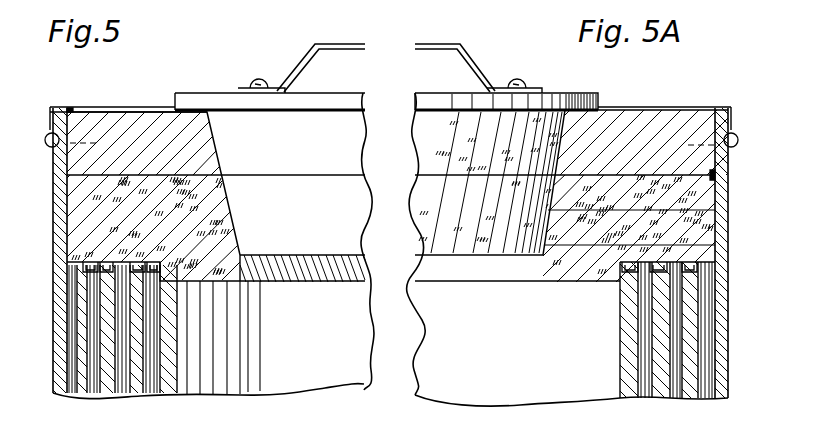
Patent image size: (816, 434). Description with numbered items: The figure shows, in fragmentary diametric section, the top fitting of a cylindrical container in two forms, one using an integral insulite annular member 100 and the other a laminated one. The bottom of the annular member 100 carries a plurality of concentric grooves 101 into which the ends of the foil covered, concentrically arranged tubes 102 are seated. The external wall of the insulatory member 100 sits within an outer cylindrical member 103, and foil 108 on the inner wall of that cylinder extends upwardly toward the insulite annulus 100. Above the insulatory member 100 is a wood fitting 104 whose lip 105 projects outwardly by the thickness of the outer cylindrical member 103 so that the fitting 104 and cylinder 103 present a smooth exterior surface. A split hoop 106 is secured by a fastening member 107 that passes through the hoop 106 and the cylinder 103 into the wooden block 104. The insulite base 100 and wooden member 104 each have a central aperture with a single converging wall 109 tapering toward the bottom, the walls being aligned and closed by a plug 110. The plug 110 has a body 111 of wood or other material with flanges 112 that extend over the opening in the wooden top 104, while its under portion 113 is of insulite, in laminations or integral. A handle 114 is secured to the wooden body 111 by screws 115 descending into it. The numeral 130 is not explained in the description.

In FIG. 5, the annular member 100 is at (80, 224).
In FIG. 5A, the annular member 100 is at (705, 245).
In FIG. 5, the concentric grooves 101 is at (140, 263).
In FIG. 5A, the concentric grooves 101 is at (690, 263).
In FIG. 5, the tubes 102 is at (152, 378).
In FIG. 5A, the tubes 102 is at (662, 372).
In FIG. 5, the outer cylindrical member 103 is at (62, 368).
In FIG. 5A, the outer cylindrical member 103 is at (720, 370).
In FIG. 5, the wood fitting 104 is at (100, 122).
In FIG. 5A, the wood fitting 104 is at (636, 120).
In FIG. 5, the lip 105 is at (52, 110).
In FIG. 5A, the lip 105 is at (729, 112).
In FIG. 5, the split hoop 106 is at (71, 110).
In FIG. 5A, the split hoop 106 is at (717, 176).
In FIG. 5, the fastening member 107 is at (48, 142).
In FIG. 5A, the fastening member 107 is at (732, 143).
In FIG. 5, the foil 108 is at (77, 350).
In FIG. 5A, the foil 108 is at (700, 346).
In FIG. 5, the converging wall 109 is at (360, 284).
In FIG. 5A, the converging wall 109 is at (481, 284).
In FIG. 5, the plug 110 is at (366, 105).
In FIG. 5A, the plug 110 is at (490, 182).
In FIG. 5, the body 111 is at (362, 169).
In FIG. 5, the flanges 112 is at (341, 103).
In FIG. 5A, the flanges 112 is at (571, 103).
In FIG. 5, the under portion 113 is at (362, 238).
In FIG. 5, the handle 114 is at (421, 47).
In FIG. 5, the screws 115 is at (256, 84).
In FIG. 5A, the screws 115 is at (519, 84).
In FIG. 5A, the bottom edge 130 is at (571, 414).